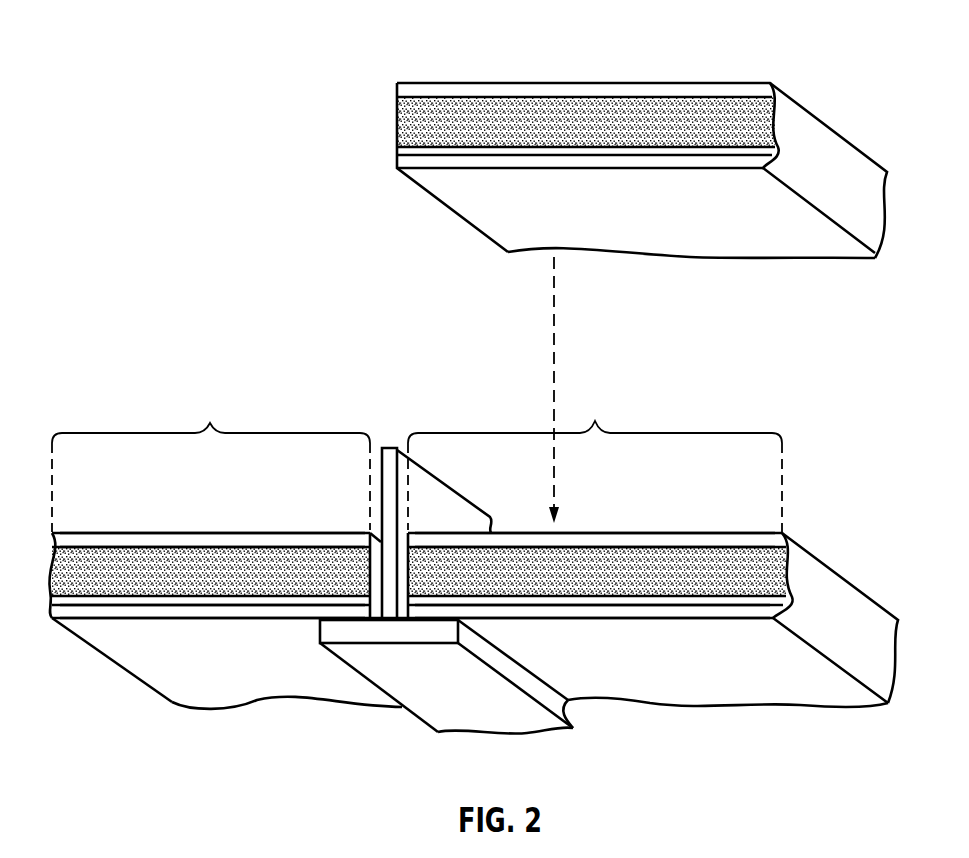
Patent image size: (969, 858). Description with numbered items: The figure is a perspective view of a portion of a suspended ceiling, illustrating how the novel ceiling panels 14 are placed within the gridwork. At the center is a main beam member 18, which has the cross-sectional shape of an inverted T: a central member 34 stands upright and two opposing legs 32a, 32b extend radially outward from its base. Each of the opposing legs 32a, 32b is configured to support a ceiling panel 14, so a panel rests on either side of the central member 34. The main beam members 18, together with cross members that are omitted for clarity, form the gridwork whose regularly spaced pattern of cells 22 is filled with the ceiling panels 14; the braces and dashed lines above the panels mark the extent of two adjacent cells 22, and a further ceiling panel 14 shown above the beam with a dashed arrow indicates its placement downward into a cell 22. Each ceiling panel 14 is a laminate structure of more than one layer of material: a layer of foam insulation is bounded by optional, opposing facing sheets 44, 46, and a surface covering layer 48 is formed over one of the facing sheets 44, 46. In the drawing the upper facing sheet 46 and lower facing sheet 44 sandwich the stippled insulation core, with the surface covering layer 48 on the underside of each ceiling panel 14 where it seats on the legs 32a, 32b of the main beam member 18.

The ceiling panel 14 is at (720, 82).
The main beam member 18 is at (480, 715).
The cell 22 is at (417, 460).
The opposing leg 32a is at (433, 642).
The opposing leg 32b is at (320, 633).
The central member 34 is at (377, 448).
The facing sheet 44 is at (216, 606).
The facing sheet 46 is at (222, 542).
The surface covering layer 48 is at (175, 686).